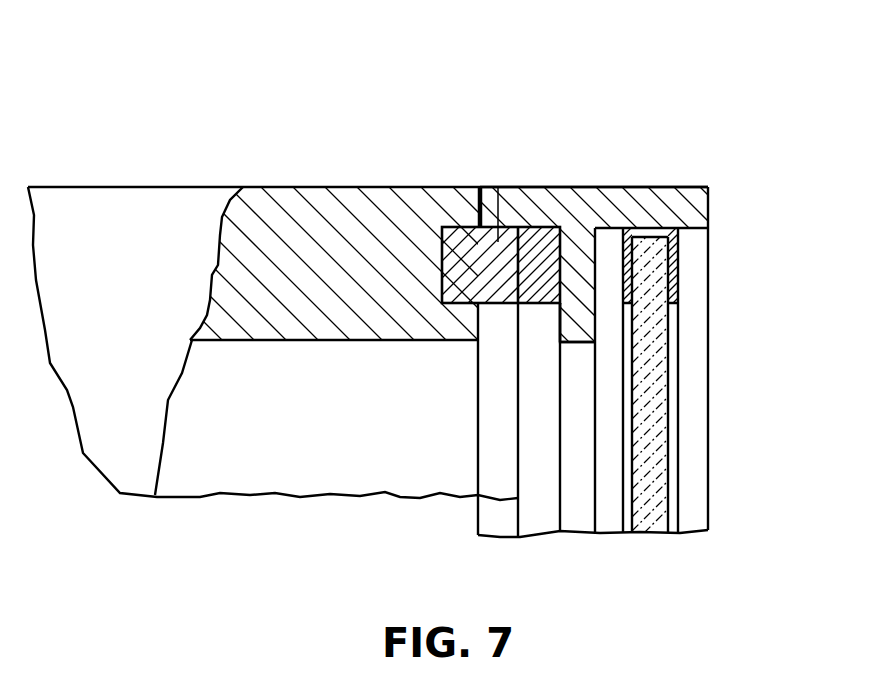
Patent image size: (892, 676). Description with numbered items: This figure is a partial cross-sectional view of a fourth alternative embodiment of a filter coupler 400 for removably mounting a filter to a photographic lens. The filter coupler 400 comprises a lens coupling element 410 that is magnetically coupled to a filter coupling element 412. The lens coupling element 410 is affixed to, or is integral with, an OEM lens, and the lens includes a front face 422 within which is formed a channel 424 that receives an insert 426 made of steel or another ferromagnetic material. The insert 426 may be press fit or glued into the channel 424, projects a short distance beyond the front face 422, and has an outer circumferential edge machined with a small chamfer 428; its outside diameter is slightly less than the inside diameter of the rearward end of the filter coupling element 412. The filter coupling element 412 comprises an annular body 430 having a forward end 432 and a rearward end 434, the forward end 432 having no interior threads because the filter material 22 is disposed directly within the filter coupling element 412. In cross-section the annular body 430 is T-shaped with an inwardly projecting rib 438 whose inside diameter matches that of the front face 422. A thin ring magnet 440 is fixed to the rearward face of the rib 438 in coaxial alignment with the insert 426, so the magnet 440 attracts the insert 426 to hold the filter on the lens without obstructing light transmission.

The lens coupling element 410 is at (355, 182).
The filter coupling element 412 is at (605, 182).
The rearward end 434 is at (478, 213).
The chamfer 428 is at (498, 187).
The filter coupler 400 is at (550, 96).
The channel 424 is at (443, 258).
The insert 426 is at (445, 303).
The magnet 440 is at (538, 305).
The front face 422 is at (480, 305).
The rib 438 is at (578, 332).
The annular body 430 is at (652, 186).
The filter material 22 is at (655, 520).
The forward end 432 is at (710, 213).